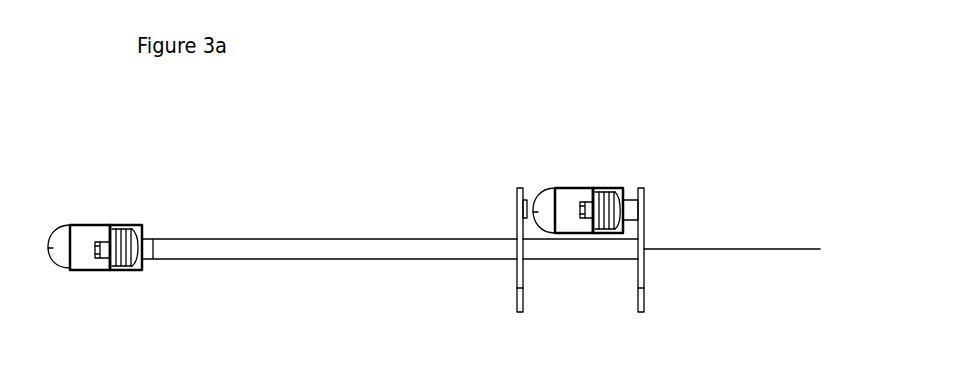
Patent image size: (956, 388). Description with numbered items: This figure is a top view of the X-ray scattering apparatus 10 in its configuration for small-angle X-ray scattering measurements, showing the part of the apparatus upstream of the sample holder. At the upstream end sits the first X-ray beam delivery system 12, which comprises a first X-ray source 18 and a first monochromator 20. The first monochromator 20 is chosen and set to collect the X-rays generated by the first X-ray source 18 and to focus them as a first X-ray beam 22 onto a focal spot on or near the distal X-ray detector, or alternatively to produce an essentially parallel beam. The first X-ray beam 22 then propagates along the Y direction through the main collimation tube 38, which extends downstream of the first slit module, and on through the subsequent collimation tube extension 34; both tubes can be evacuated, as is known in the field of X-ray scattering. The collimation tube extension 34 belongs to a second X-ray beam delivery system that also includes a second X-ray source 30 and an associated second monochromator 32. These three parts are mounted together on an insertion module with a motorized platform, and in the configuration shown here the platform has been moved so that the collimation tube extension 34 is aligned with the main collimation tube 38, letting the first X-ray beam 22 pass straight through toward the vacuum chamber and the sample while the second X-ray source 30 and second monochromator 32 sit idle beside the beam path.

The X-ray scattering apparatus 10 is at (418, 122).
The first X-ray beam delivery system 12 is at (98, 205).
The first X-ray source 18 is at (83, 257).
The first monochromator 20 is at (140, 224).
The main collimation tube 38 is at (348, 248).
The collimation tube extension 34 is at (582, 255).
The second X-ray source 30 is at (565, 200).
The second monochromator 32 is at (608, 200).
The first X-ray beam 22 is at (760, 249).